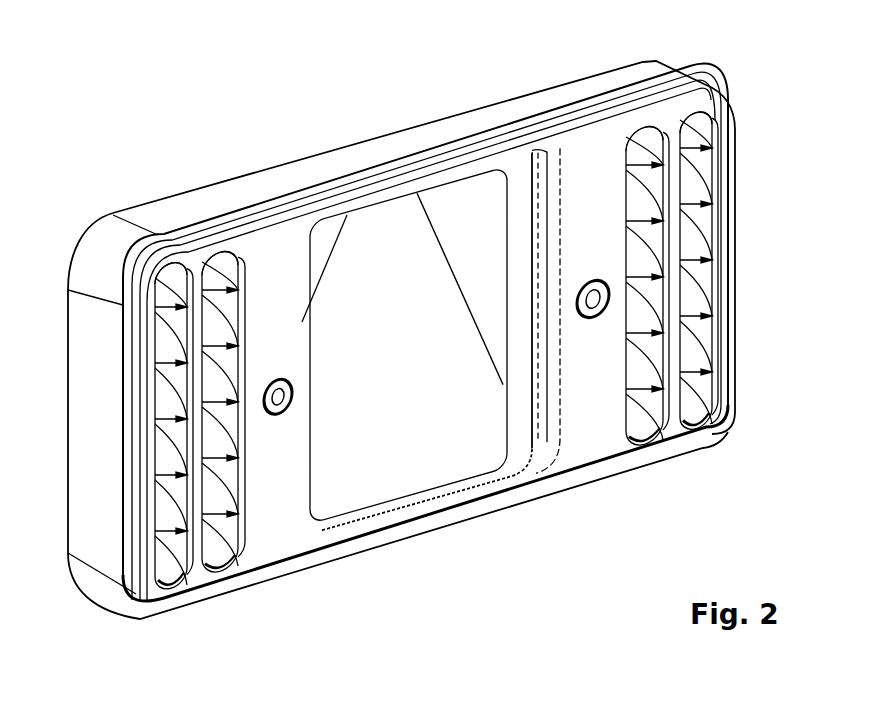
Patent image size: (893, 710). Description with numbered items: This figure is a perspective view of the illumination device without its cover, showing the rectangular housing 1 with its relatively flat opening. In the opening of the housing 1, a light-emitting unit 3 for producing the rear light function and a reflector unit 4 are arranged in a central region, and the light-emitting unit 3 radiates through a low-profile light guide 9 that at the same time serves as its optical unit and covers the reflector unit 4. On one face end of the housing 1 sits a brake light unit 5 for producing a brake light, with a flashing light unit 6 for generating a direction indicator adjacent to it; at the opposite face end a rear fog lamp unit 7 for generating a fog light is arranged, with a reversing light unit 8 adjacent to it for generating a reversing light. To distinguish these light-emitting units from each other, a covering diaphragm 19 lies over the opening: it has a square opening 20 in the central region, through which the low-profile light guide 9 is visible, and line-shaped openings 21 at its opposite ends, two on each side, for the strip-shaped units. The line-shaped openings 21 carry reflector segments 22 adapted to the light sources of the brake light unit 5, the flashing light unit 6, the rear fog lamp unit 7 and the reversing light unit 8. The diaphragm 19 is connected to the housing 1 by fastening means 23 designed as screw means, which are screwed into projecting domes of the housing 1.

The housing 1 is at (233, 192).
The light-emitting unit 3 is at (425, 364).
The reflector unit 4 is at (396, 566).
The brake light unit 5 is at (167, 575).
The flashing light unit 6 is at (220, 558).
The rear fog lamp unit 7 is at (697, 418).
The reversing light unit 8 is at (642, 436).
The low-profile light guide 9 is at (453, 452).
The covering diaphragm 19 is at (277, 548).
The square opening 20 is at (553, 462).
The line-shaped openings 21 is at (190, 262).
The reflector segments 22 is at (690, 234).
The fastening means 23 is at (271, 378).